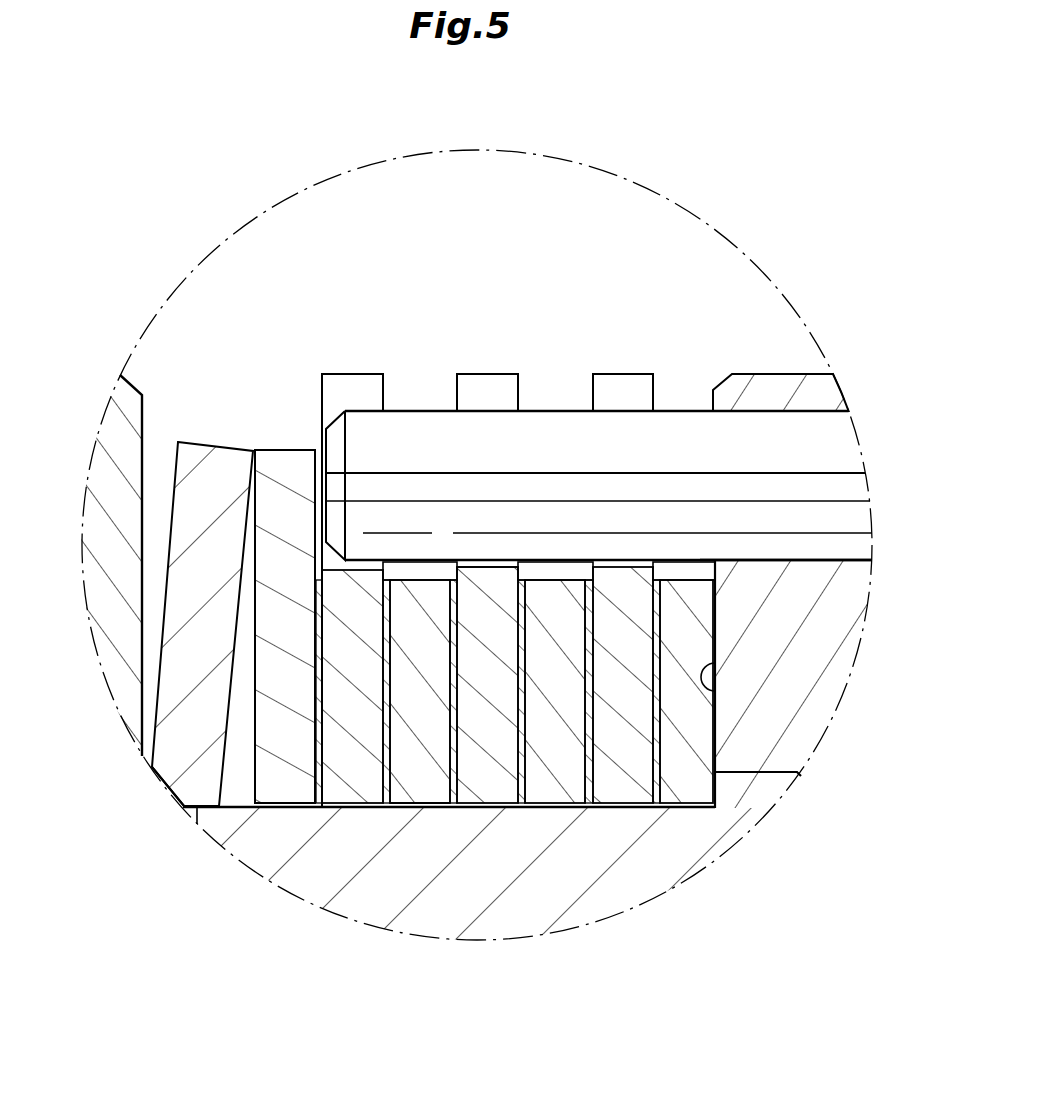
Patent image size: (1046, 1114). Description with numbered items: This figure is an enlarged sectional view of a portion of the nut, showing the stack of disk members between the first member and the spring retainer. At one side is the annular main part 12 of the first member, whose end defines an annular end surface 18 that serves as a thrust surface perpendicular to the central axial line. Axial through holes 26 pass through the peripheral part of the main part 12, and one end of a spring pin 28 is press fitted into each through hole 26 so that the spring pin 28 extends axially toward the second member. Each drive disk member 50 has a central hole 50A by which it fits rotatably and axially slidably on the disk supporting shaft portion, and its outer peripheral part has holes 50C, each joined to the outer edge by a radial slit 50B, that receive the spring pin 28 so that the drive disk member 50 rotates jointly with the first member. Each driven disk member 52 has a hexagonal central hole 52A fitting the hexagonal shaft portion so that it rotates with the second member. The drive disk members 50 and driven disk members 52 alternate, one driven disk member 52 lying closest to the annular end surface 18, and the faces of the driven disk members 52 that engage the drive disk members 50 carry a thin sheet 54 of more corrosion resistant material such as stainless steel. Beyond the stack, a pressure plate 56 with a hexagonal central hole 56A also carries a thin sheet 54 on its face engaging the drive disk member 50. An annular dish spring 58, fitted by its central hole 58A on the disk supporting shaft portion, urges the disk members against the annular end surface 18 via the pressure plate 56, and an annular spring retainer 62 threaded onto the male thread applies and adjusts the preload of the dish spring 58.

The annular main part 12 is at (825, 698).
The annular end surface 18 is at (715, 691).
The axial through hole 26 is at (832, 549).
The spring pin 28 is at (690, 433).
The drive disk member 50 is at (343, 787).
The central hole 50A is at (352, 808).
The radial slit 50B is at (490, 385).
The hole 50C is at (492, 567).
The driven disk member 52 is at (415, 805).
The central hole 52A is at (437, 808).
The thin sheet 54 is at (318, 812).
The pressure plate 56 is at (278, 460).
The hexagonal central hole 56A is at (255, 810).
The dish spring 58 is at (220, 458).
The hexagonal central hole 58A is at (195, 815).
The spring retainer 62 is at (130, 390).